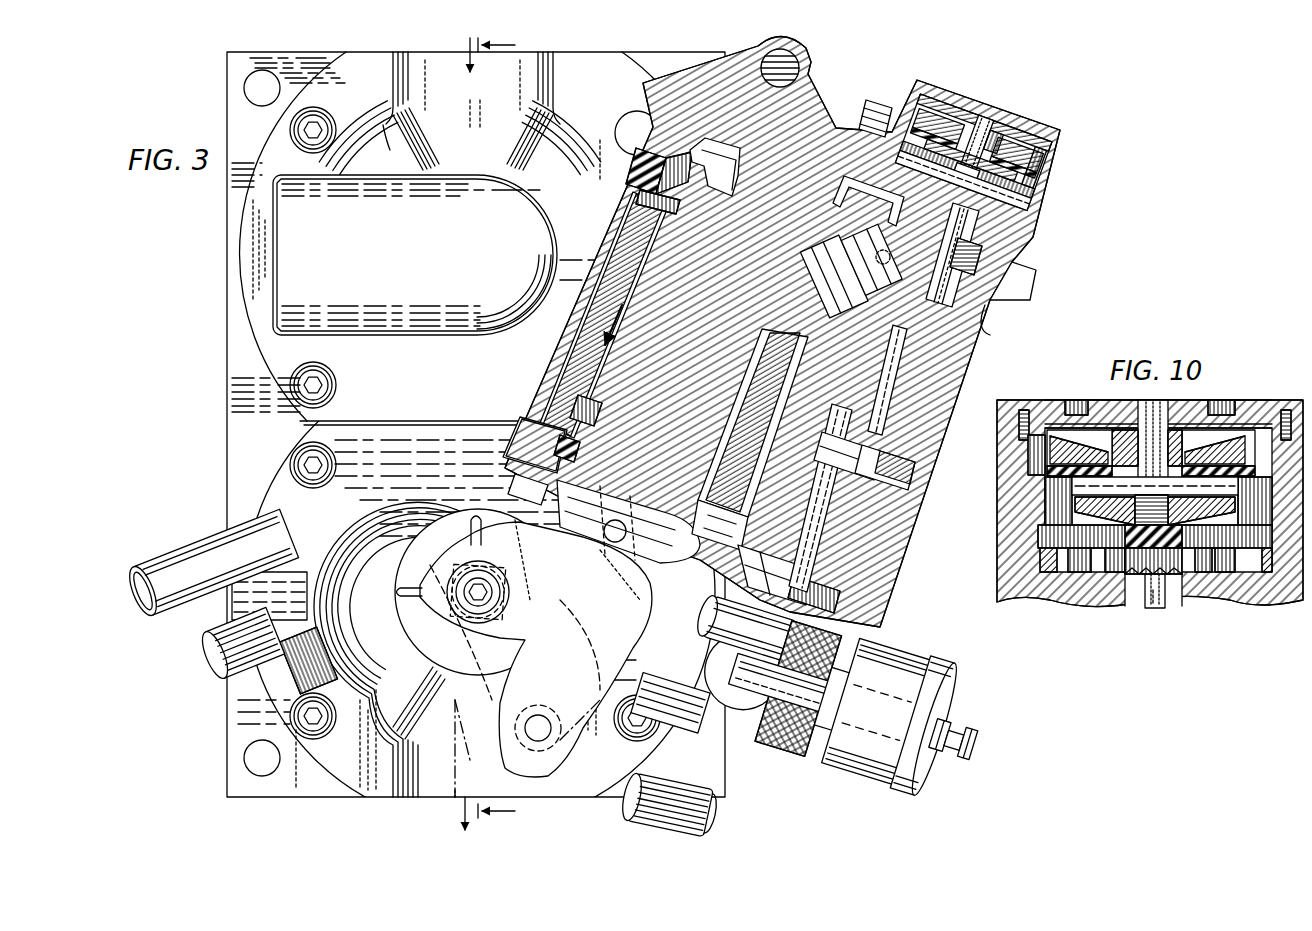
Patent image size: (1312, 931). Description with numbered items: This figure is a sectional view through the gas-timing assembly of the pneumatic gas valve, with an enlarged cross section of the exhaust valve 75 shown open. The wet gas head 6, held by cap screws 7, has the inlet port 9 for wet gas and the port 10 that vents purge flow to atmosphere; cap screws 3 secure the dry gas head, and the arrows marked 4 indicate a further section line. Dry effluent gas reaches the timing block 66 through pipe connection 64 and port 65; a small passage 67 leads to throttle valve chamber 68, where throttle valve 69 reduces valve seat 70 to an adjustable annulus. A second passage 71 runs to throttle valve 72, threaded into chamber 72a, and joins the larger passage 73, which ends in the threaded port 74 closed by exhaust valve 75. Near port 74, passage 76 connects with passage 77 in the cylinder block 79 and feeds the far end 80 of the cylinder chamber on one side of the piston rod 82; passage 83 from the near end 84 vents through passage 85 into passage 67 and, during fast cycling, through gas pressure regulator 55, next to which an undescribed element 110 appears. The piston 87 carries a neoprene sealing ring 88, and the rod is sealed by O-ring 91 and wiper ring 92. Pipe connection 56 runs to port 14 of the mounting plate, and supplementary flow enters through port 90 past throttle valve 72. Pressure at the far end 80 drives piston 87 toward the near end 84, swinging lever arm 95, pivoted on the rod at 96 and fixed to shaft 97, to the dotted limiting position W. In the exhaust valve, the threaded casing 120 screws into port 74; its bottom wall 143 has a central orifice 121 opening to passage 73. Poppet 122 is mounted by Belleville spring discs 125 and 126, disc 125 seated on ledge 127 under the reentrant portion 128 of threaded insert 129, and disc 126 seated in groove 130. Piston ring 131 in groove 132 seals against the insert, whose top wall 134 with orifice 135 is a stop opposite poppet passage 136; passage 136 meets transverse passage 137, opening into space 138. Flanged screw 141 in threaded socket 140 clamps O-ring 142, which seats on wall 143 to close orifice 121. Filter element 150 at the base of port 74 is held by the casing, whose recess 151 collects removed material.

In FIG. 3, the cap screws 3 is at (330, 452).
In FIG. 3, the section line 4 is at (490, 438).
In FIG. 3, the wet gas head 6 is at (385, 138).
In FIG. 3, the cap screws 7 is at (332, 118).
In FIG. 3, the inlet port 9 is at (437, 106).
In FIG. 3, the port 10 is at (240, 257).
In FIG. 3, the port 14 is at (234, 612).
In FIG. 3, the gas pressure regulator 55 is at (973, 676).
In FIG. 3, the pipe connection 56 is at (200, 550).
In FIG. 3, the pipe connection 64 is at (220, 676).
In FIG. 3, the port 65 is at (742, 708).
In FIG. 3, the timing block 66 is at (904, 556).
In FIG. 3, the small passage 67 is at (806, 490).
In FIG. 3, the throttle valve chamber 68 is at (896, 450).
In FIG. 3, the throttle valve 69 is at (888, 474).
In FIG. 3, the valve seat 70 is at (842, 436).
In FIG. 3, the second passage 71 is at (900, 368).
In FIG. 3, the throttle valve 72 is at (986, 282).
In FIG. 3, the throttle valve chamber 72a is at (988, 326).
In FIG. 3, the larger passage 73 is at (956, 228).
In FIG. 10, the larger passage 73 is at (1153, 612).
In FIG. 3, the port 74 is at (976, 115).
In FIG. 10, the port 74 is at (1262, 378).
In FIG. 3, the exhaust valve 75 is at (1015, 106).
In FIG. 10, the exhaust valve 75 is at (1198, 420).
In FIG. 3, the passage 76 is at (862, 196).
In FIG. 3, the passage 77 is at (872, 130).
In FIG. 3, the cylinder block 79 is at (815, 62).
In FIG. 3, the far end 80 is at (838, 190).
In FIG. 3, the piston rod 82 is at (632, 316).
In FIG. 3, the second passage 83 is at (716, 470).
In FIG. 3, the near end 84 is at (560, 378).
In FIG. 3, the passage 85 is at (766, 545).
In FIG. 3, the piston 87 is at (700, 194).
In FIG. 3, the neoprene sealing ring 88 is at (640, 206).
In FIG. 3, the port 90 is at (896, 200).
In FIG. 3, the O-ring 91 is at (588, 428).
In FIG. 3, the wiper ring 92 is at (572, 460).
In FIG. 3, the lever arm 95 is at (578, 622).
In FIG. 3, the pivot 96 is at (622, 486).
In FIG. 3, the shaft 97 is at (470, 582).
In FIG. 3, the actuator cylinder 110 is at (899, 690).
In FIG. 3, the casing 120 is at (911, 96).
In FIG. 10, the casing 120 is at (1045, 472).
In FIG. 10, the central orifice 121 is at (1165, 566).
In FIG. 3, the poppet 122 is at (937, 122).
In FIG. 10, the poppet 122 is at (1102, 522).
In FIG. 3, the Belleville spring disc 125 is at (1050, 123).
In FIG. 10, the Belleville spring disc 125 is at (1060, 456).
In FIG. 3, the Belleville spring disc 126 is at (998, 152).
In FIG. 10, the Belleville spring disc 126 is at (1045, 512).
In FIG. 10, the ledge 127 is at (1096, 458).
In FIG. 10, the reentrant portion 128 is at (1210, 462).
In FIG. 3, the insert 129 is at (924, 88).
In FIG. 10, the insert 129 is at (1036, 468).
In FIG. 10, the groove 130 is at (1186, 526).
In FIG. 3, the piston ring 131 is at (1051, 124).
In FIG. 10, the piston ring 131 is at (1244, 462).
In FIG. 3, the groove 132 is at (977, 143).
In FIG. 10, the groove 132 is at (1162, 436).
In FIG. 3, the top wall 134 is at (994, 89).
In FIG. 10, the top wall 134 is at (1200, 424).
In FIG. 10, the central orifice 135 is at (1140, 408).
In FIG. 10, the passage 136 is at (1122, 440).
In FIG. 10, the transverse passage 137 is at (1180, 490).
In FIG. 3, the open space 138 is at (1042, 143).
In FIG. 10, the open space 138 is at (1245, 510).
In FIG. 10, the threaded socket 140 is at (1135, 506).
In FIG. 3, the flanged screw 141 is at (972, 169).
In FIG. 10, the flanged screw 141 is at (1146, 584).
In FIG. 10, the O-ring 142 is at (1196, 560).
In FIG. 10, the bottom wall 143 is at (1050, 580).
In FIG. 10, the filter element 150 is at (1118, 572).
In FIG. 10, the recess 151 is at (1098, 566).
In FIG. 3, the limiting position W is at (442, 773).